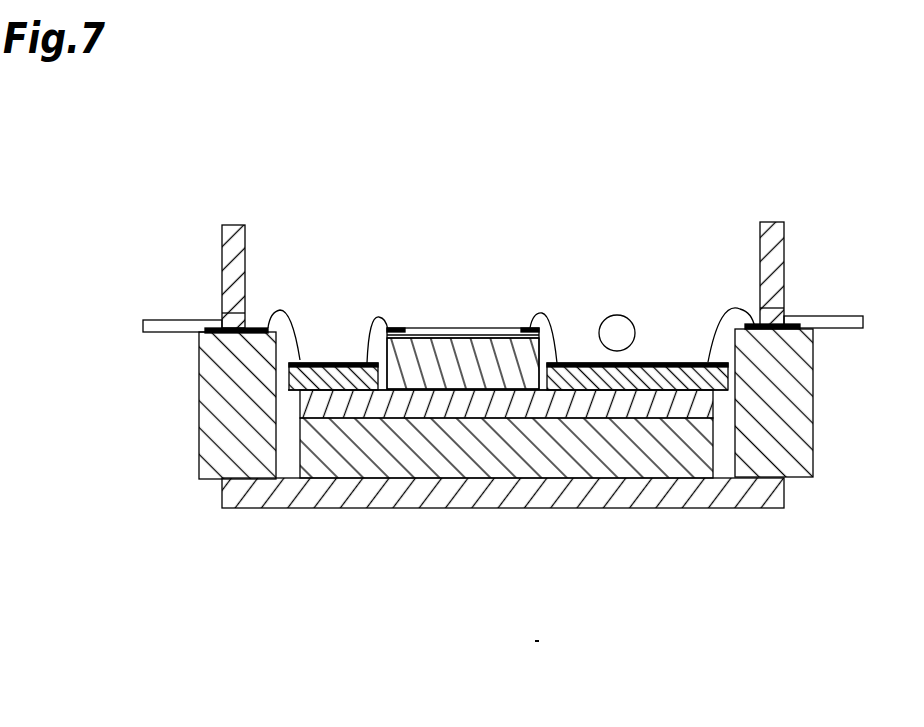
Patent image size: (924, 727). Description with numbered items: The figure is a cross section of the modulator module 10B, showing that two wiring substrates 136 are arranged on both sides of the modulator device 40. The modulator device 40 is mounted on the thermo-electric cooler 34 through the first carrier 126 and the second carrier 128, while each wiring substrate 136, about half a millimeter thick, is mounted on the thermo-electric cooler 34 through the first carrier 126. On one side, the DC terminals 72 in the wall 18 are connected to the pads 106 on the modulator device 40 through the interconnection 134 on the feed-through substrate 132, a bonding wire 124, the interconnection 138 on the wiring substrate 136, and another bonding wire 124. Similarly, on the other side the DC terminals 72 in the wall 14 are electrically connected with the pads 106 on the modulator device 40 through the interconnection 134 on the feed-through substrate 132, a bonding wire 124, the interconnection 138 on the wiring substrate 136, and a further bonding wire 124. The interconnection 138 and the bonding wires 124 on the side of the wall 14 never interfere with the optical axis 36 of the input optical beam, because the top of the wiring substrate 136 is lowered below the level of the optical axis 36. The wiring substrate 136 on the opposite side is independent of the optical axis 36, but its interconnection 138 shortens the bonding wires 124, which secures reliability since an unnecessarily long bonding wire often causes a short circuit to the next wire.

The modulator module 10B is at (691, 520).
The wall 14 is at (781, 249).
The wall 18 is at (227, 239).
The thermo-electric cooler 34 is at (347, 458).
The optical axis 36 is at (612, 314).
The modulator device 40 is at (449, 300).
The DC terminal 72 is at (160, 324).
The pad 106 is at (399, 328).
The bonding wire 124 is at (300, 358).
The first carrier 126 is at (505, 414).
The second carrier 128 is at (470, 347).
The feed-through substrate 132 is at (205, 381).
The interconnection 134 is at (253, 325).
The wiring substrate 136 is at (291, 382).
The interconnection 138 is at (322, 362).